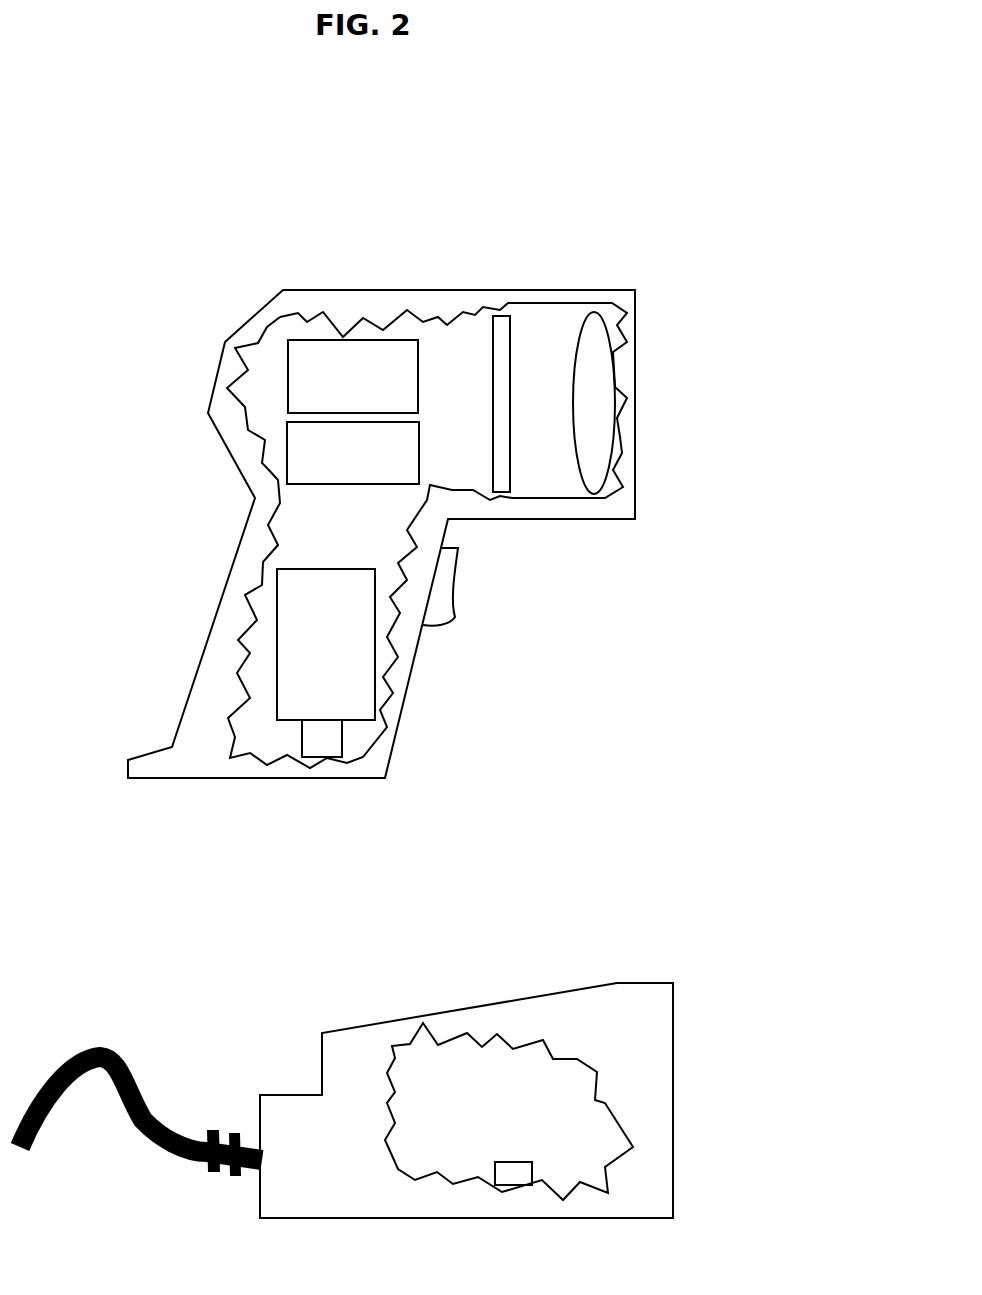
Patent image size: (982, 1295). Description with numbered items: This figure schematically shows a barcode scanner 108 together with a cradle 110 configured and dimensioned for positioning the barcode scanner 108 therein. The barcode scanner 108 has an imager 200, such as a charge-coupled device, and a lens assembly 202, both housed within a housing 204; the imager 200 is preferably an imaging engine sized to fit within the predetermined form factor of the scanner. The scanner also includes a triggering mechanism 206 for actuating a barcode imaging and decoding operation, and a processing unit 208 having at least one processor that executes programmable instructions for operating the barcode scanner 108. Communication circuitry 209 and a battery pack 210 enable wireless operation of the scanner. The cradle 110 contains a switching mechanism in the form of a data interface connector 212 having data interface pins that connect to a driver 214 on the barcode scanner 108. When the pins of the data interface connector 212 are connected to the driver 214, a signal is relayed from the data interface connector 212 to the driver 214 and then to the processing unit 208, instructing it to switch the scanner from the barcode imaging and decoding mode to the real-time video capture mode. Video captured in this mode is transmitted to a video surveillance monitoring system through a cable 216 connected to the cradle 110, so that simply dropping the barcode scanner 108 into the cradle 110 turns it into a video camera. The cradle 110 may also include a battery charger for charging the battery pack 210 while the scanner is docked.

The barcode scanner 108 is at (622, 212).
The cradle 110 is at (567, 978).
The imager 200 is at (500, 478).
The lens assembly 202 is at (593, 342).
The housing 204 is at (443, 310).
The triggering mechanism 206 is at (443, 610).
The processing unit 208 is at (307, 610).
The communication circuitry 209 is at (323, 362).
The battery pack 210 is at (323, 457).
The data interface connector 212 is at (518, 1170).
The driver 214 is at (322, 745).
The cable 216 is at (122, 1047).